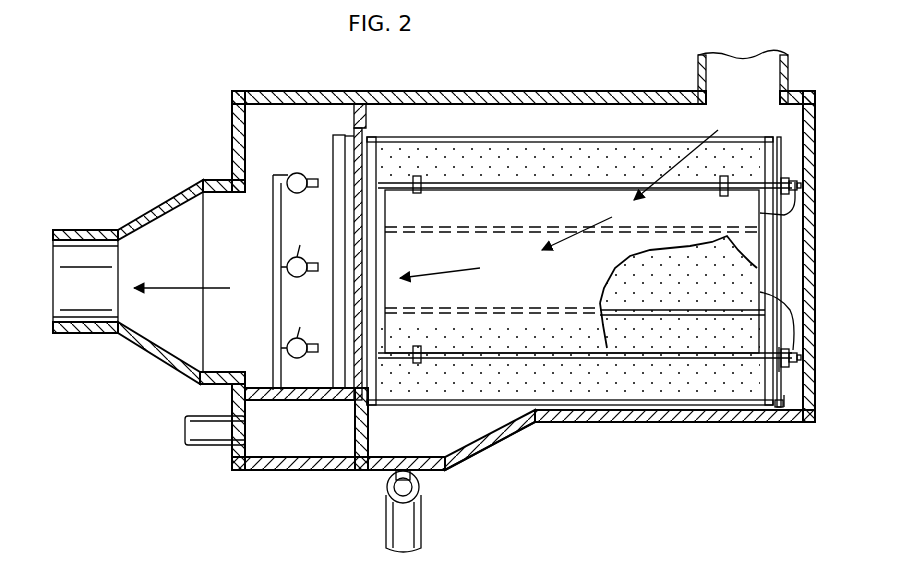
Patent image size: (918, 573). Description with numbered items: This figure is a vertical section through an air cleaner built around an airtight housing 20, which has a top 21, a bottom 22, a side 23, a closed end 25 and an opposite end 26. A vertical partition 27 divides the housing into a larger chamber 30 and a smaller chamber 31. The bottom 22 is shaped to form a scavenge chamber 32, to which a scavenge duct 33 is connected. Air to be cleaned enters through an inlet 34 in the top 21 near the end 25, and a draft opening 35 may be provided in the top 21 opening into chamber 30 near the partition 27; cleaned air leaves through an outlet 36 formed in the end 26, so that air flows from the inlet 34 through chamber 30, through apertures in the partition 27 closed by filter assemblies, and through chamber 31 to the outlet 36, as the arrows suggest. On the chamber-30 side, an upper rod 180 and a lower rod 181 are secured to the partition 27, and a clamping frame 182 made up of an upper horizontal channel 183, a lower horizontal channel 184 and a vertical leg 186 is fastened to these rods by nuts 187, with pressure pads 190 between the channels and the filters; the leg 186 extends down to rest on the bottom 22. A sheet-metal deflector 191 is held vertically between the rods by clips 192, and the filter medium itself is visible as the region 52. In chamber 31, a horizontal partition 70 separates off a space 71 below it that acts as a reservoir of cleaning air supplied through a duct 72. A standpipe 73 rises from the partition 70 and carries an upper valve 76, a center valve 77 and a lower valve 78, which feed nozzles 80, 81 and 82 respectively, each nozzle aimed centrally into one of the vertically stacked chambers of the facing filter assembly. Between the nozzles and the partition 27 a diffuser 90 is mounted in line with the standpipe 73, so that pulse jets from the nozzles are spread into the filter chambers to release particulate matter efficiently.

The airtight housing 20 is at (600, 84).
The top 21 is at (509, 100).
The bottom 22 is at (637, 422).
The side 23 is at (439, 120).
The end 25 is at (818, 424).
The end 26 is at (231, 158).
The vertical partition 27 is at (354, 122).
The larger chamber 30 is at (532, 127).
The smaller chamber 31 is at (258, 120).
The scavenge chamber 32 is at (478, 442).
The scavenge duct 33 is at (386, 488).
The inlet 34 is at (698, 71).
The draft opening 35 is at (399, 100).
The outlet 36 is at (73, 231).
The tray 52 is at (367, 378).
The horizontal partition 70 is at (325, 401).
The space 71 is at (281, 440).
The duct 72 is at (207, 437).
The standpipe 73 is at (277, 289).
The upper valve 76 is at (292, 176).
The center valve 77 is at (302, 239).
The lower valve 78 is at (304, 322).
The nozzle 80 is at (303, 192).
The nozzle 81 is at (306, 274).
The nozzle 82 is at (303, 357).
The diffuser 90 is at (338, 282).
The upper rod 180 is at (535, 186).
The lower rod 181 is at (610, 360).
The clamping frame 182 is at (788, 378).
The upper horizontal channel 183 is at (780, 176).
The lower horizontal channel 184 is at (777, 352).
The vertical leg 186 is at (771, 408).
The nut 187 is at (766, 213).
The pressure pad 190 is at (779, 182).
The deflector 191 is at (516, 283).
The clip 192 is at (417, 193).